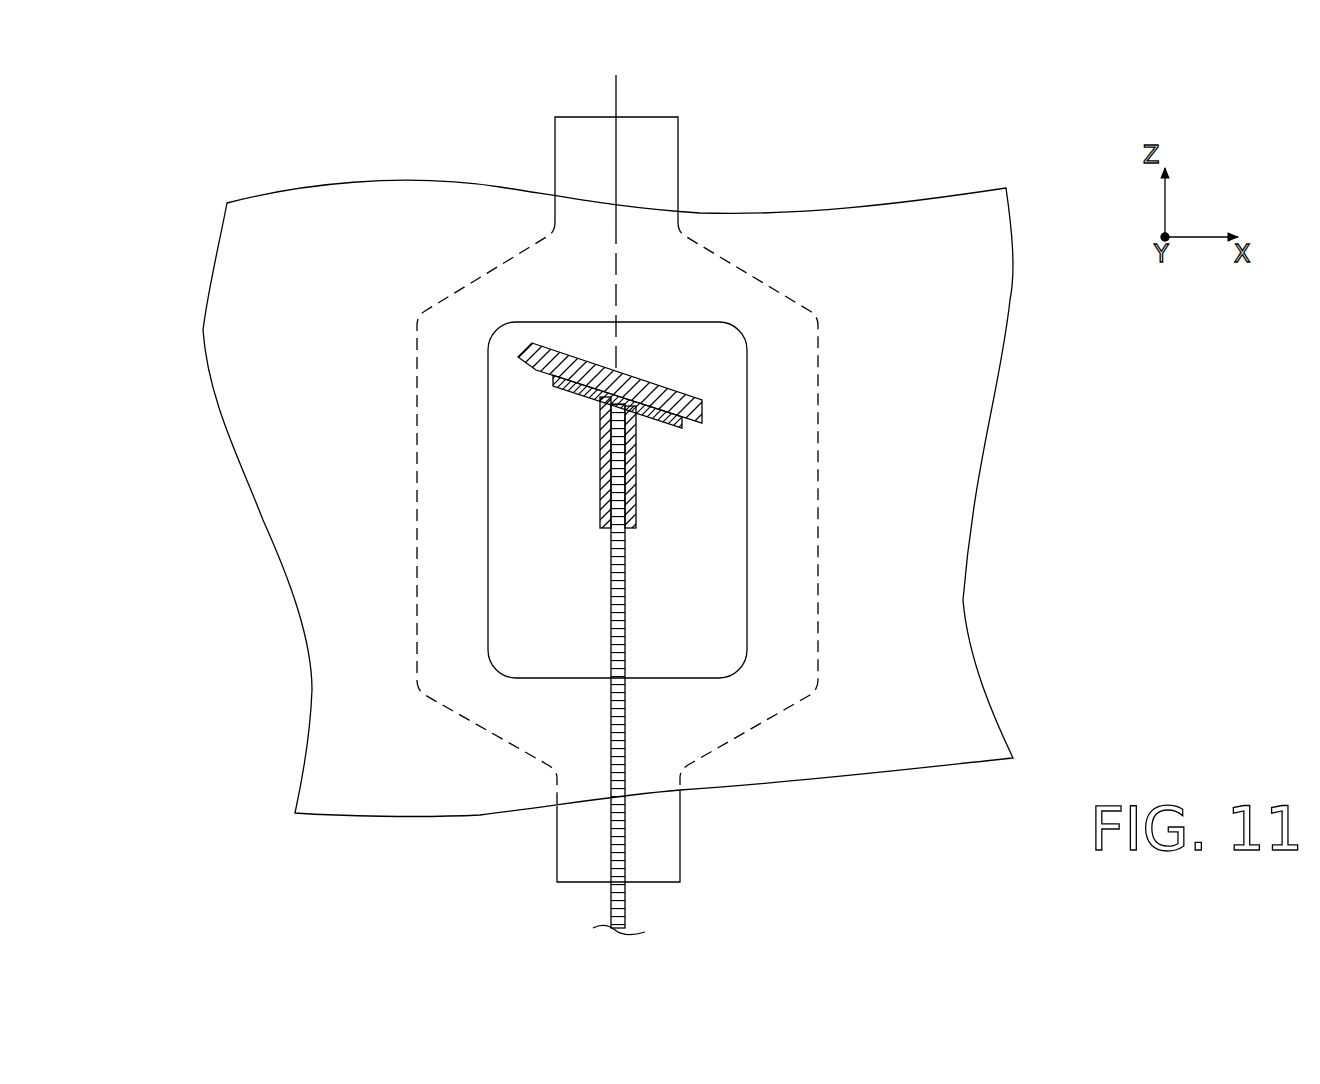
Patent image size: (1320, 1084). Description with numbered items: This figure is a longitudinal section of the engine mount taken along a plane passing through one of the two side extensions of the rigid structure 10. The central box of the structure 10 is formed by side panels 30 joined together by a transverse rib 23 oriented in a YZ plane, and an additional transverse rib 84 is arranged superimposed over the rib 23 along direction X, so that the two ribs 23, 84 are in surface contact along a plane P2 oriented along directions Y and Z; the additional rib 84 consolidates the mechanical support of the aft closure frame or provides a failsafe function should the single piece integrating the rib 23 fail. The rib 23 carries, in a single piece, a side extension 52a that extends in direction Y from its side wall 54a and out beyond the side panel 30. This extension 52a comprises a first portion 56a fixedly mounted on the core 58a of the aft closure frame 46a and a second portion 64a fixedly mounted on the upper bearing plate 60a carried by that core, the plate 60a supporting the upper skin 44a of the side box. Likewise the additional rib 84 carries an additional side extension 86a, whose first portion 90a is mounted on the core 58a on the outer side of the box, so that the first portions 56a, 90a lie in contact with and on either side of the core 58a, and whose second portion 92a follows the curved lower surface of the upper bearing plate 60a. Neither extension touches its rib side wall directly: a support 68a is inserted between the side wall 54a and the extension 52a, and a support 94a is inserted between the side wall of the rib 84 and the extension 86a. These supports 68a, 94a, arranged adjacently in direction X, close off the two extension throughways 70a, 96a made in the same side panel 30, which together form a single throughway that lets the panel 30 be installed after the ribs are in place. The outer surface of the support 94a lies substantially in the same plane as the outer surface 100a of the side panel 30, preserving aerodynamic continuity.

The rigid structure 10 is at (340, 168).
The side panel 30 is at (240, 267).
The transverse rib 23 is at (551, 132).
The additional transverse rib 84 is at (682, 132).
The plane P2 is at (618, 98).
The upper skin 44a is at (545, 352).
The aft closure frame 46a is at (606, 708).
The side extension 52a is at (598, 455).
The side wall 54a is at (430, 503).
The first portion 56a is at (600, 504).
The core 58a is at (627, 712).
The upper bearing plate 60a is at (703, 424).
The second portion 64a is at (560, 395).
The support for side extension 68a is at (513, 440).
The extension throughway 70a is at (488, 572).
The additional side extension 86a is at (640, 478).
The first portion 90a is at (634, 510).
The second portion 92a is at (665, 422).
The support for side extension 94a is at (720, 345).
The extension throughway 96a is at (735, 377).
The outer surface of side panel 100a is at (967, 717).